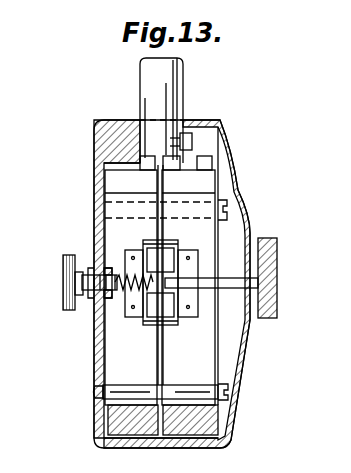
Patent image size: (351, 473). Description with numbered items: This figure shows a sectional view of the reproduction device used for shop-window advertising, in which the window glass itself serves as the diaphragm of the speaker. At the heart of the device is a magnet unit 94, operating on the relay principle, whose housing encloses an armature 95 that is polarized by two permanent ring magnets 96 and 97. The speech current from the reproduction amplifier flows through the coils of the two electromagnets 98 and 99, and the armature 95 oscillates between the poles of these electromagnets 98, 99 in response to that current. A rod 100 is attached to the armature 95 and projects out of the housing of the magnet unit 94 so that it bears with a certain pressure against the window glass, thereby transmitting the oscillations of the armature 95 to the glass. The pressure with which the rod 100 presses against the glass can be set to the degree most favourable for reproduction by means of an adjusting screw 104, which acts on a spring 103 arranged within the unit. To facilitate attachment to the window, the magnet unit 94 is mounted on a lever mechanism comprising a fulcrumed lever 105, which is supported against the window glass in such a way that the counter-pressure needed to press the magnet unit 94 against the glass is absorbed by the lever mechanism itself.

The magnet unit 94 is at (97, 143).
The armature 95 is at (186, 312).
The permanent ring magnet 96 is at (120, 360).
The permanent ring magnet 97 is at (205, 367).
The electromagnet 98 is at (140, 308).
The electromagnet 99 is at (178, 327).
The rod 100 is at (228, 280).
The spring 103 is at (138, 292).
The adjusting screw 104 is at (63, 292).
The fulcrumed lever 105 is at (172, 92).